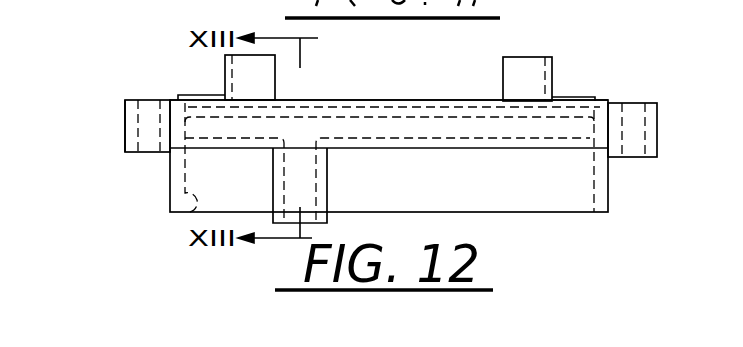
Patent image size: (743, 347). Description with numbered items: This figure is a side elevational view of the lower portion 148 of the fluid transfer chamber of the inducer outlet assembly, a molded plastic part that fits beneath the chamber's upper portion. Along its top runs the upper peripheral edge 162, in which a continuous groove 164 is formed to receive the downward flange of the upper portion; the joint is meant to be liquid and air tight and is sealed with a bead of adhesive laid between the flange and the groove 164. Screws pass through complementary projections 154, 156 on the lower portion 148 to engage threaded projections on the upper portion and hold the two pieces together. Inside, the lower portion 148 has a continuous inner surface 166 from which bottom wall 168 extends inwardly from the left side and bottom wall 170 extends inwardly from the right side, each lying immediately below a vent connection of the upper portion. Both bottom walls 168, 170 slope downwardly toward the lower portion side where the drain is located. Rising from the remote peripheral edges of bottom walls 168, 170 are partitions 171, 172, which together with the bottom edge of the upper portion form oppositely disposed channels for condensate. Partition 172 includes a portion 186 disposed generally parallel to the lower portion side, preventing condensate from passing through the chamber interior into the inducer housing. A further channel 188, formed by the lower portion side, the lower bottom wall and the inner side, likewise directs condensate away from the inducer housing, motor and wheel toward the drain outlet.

The lower portion 148 is at (630, 206).
The complementary projection 154 is at (125, 130).
The complementary projection 156 is at (658, 123).
The upper peripheral edge 162 is at (172, 99).
The continuous groove 164 is at (178, 98).
The continuous inner surface 166 is at (187, 215).
The bottom wall 168 is at (203, 91).
The bottom wall 170 is at (567, 97).
The partition 171 is at (225, 78).
The partition 172 is at (553, 68).
The partition portion 186 is at (263, 70).
The channel 188 is at (365, 127).